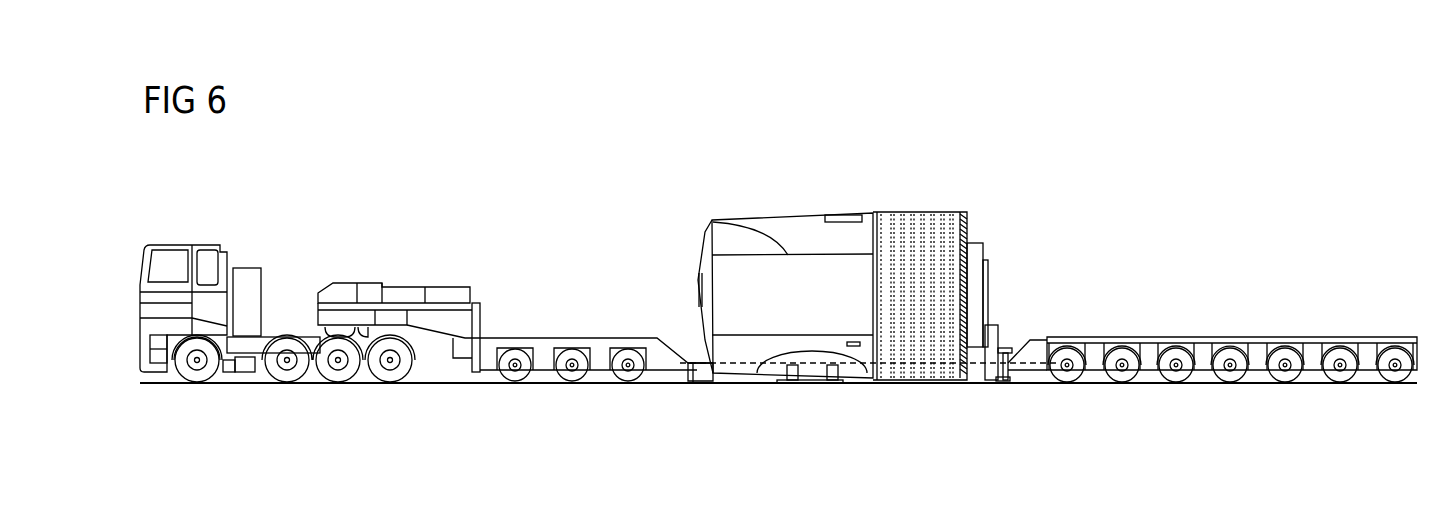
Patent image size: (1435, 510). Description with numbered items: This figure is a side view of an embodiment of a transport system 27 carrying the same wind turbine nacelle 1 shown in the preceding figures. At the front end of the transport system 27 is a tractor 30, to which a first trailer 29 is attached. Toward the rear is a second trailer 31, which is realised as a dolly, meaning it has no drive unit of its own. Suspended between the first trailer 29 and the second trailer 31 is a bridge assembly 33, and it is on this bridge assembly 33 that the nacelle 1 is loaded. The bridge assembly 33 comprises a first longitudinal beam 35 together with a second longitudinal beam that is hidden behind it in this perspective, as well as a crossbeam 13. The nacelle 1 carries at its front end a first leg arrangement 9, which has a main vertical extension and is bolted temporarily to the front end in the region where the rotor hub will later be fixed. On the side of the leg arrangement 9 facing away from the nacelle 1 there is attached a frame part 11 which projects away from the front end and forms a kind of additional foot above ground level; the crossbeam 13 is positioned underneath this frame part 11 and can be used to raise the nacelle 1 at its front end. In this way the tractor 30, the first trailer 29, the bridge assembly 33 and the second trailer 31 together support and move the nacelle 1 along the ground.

The wind turbine nacelle 1 is at (987, 223).
The first leg arrangement 9 is at (993, 325).
The frame part 11 is at (1005, 347).
The crossbeam 13 is at (1008, 368).
The transport system 27 is at (660, 179).
The first trailer 29 is at (520, 342).
The tractor 30 is at (199, 229).
The second trailer 31 is at (1093, 345).
The bridge assembly 33 is at (1003, 380).
The first longitudinal beam 35 is at (705, 375).